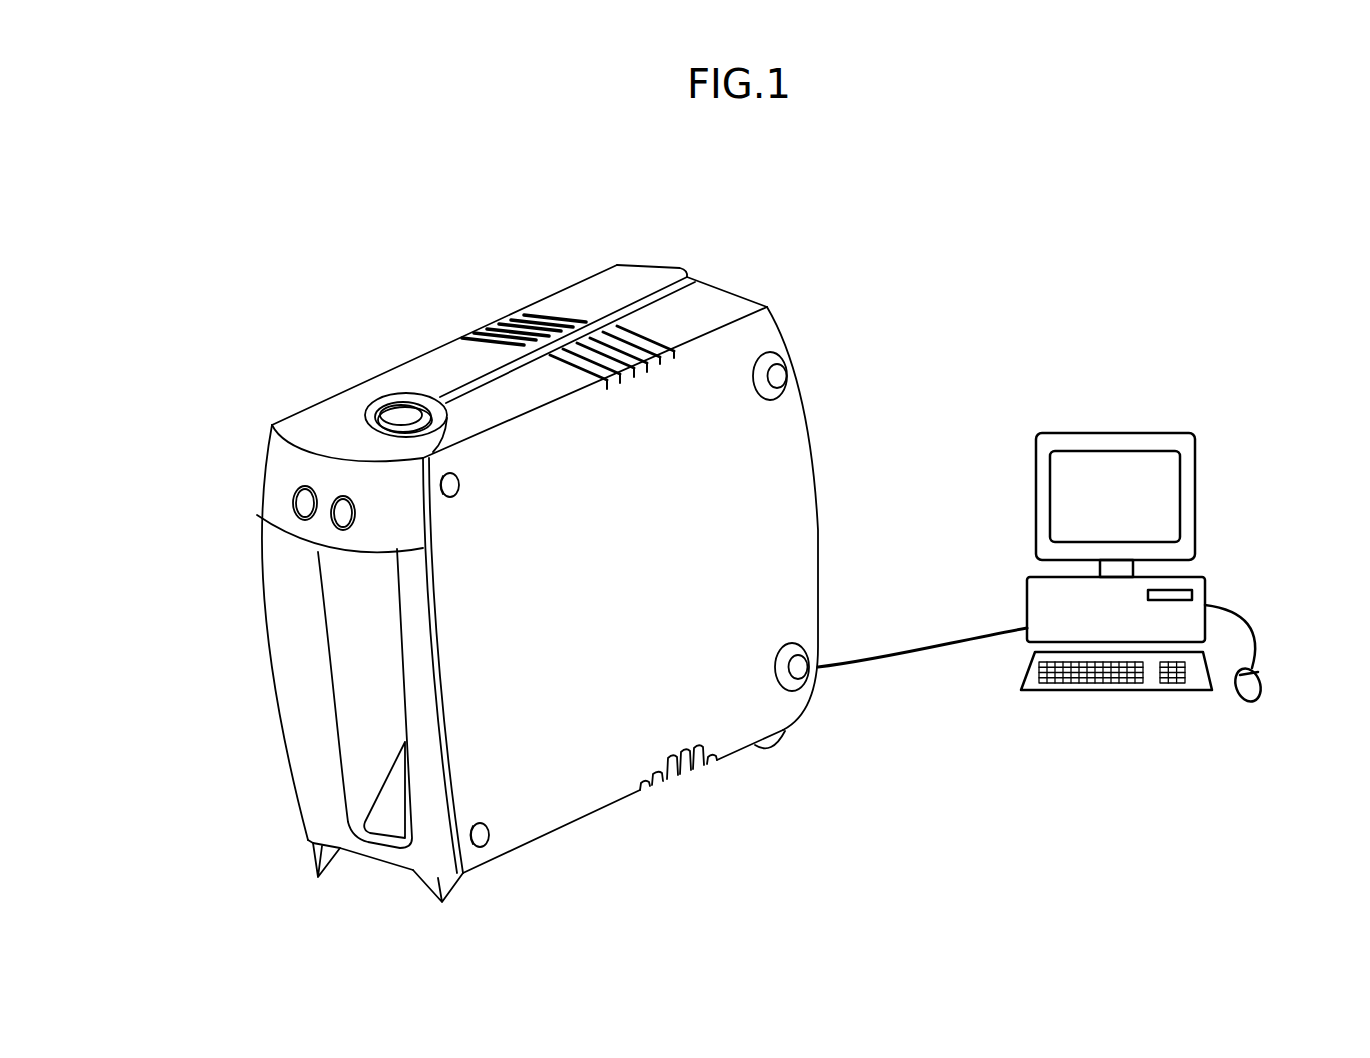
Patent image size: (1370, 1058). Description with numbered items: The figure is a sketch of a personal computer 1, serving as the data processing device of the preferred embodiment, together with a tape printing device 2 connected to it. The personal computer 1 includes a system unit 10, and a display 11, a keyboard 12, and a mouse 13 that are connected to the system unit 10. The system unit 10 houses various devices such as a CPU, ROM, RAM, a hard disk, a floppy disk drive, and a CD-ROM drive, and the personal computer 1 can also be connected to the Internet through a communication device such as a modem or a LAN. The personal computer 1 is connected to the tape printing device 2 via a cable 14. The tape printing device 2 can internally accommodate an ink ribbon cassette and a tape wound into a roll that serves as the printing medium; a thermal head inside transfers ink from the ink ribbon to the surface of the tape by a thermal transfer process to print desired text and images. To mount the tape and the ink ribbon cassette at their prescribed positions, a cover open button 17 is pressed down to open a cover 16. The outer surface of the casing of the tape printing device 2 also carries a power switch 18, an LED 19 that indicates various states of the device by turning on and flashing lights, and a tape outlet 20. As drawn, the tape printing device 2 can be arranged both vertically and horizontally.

The personal computer 1 is at (1137, 543).
The tape printing device 2 is at (775, 258).
The system unit 10 is at (1027, 593).
The display 11 is at (1195, 475).
The keyboard 12 is at (1107, 692).
The mouse 13 is at (1262, 697).
The cable 14 is at (913, 655).
The cover 16 is at (594, 292).
The cover open button 17 is at (398, 413).
The power switch 18 is at (303, 505).
The LED 19 is at (341, 515).
The tape outlet 20 is at (387, 667).